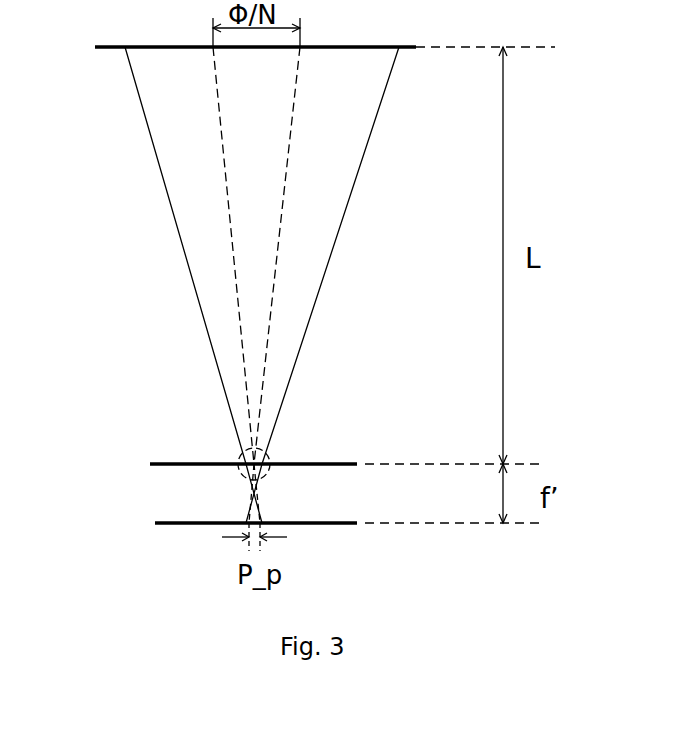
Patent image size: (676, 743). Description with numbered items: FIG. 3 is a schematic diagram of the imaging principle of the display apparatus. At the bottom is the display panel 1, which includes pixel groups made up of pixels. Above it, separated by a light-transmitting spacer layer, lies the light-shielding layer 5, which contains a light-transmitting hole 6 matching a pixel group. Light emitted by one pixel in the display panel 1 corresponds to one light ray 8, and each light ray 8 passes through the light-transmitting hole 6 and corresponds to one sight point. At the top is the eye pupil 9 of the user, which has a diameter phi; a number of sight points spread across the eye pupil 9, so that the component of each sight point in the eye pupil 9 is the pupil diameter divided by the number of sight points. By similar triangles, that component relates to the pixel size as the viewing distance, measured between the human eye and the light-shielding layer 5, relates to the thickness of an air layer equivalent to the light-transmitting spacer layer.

The eye pupil 9 is at (108, 48).
The light ray 8 is at (208, 345).
The light-transmitting hole 6 is at (237, 455).
The light-shielding layer 5 is at (147, 463).
The display panel 1 is at (158, 523).